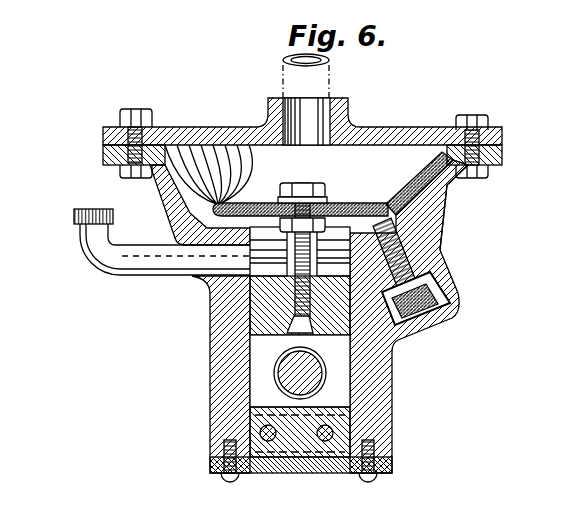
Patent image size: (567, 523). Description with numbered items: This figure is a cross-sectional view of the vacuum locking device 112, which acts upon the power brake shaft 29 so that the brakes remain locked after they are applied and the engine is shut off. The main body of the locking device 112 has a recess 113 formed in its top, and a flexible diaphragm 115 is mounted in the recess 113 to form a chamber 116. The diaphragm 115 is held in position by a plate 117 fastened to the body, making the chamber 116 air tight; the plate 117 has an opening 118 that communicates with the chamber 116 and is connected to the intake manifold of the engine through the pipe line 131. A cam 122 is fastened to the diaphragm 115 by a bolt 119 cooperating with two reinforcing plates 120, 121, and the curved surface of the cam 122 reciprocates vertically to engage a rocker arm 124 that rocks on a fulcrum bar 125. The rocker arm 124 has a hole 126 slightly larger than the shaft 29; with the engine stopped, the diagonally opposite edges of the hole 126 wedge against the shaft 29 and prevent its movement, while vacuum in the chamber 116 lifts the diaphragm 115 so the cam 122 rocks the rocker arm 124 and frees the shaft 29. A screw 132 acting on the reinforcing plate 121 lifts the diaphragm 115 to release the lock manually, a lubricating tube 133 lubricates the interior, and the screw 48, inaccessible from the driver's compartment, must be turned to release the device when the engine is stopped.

The vacuum locking device 112 is at (197, 120).
The recess 113 is at (458, 199).
The flexible diaphragm 115 is at (414, 172).
The chamber 116 is at (256, 150).
The plate 117 is at (394, 142).
The opening 118 is at (320, 106).
The bolt 119 is at (305, 184).
The reinforcing plate 120 is at (259, 200).
The reinforcing plate 121 is at (393, 213).
The cam 122 is at (265, 317).
The rocker arm 124 is at (262, 295).
The fulcrum bar 125 is at (308, 444).
The hole 126 is at (320, 393).
The power brake shaft 29 is at (317, 368).
The pipe line 131 is at (283, 72).
The screw 132 is at (448, 274).
The lubricating tube 133 is at (108, 250).
The screw 48 is at (418, 328).